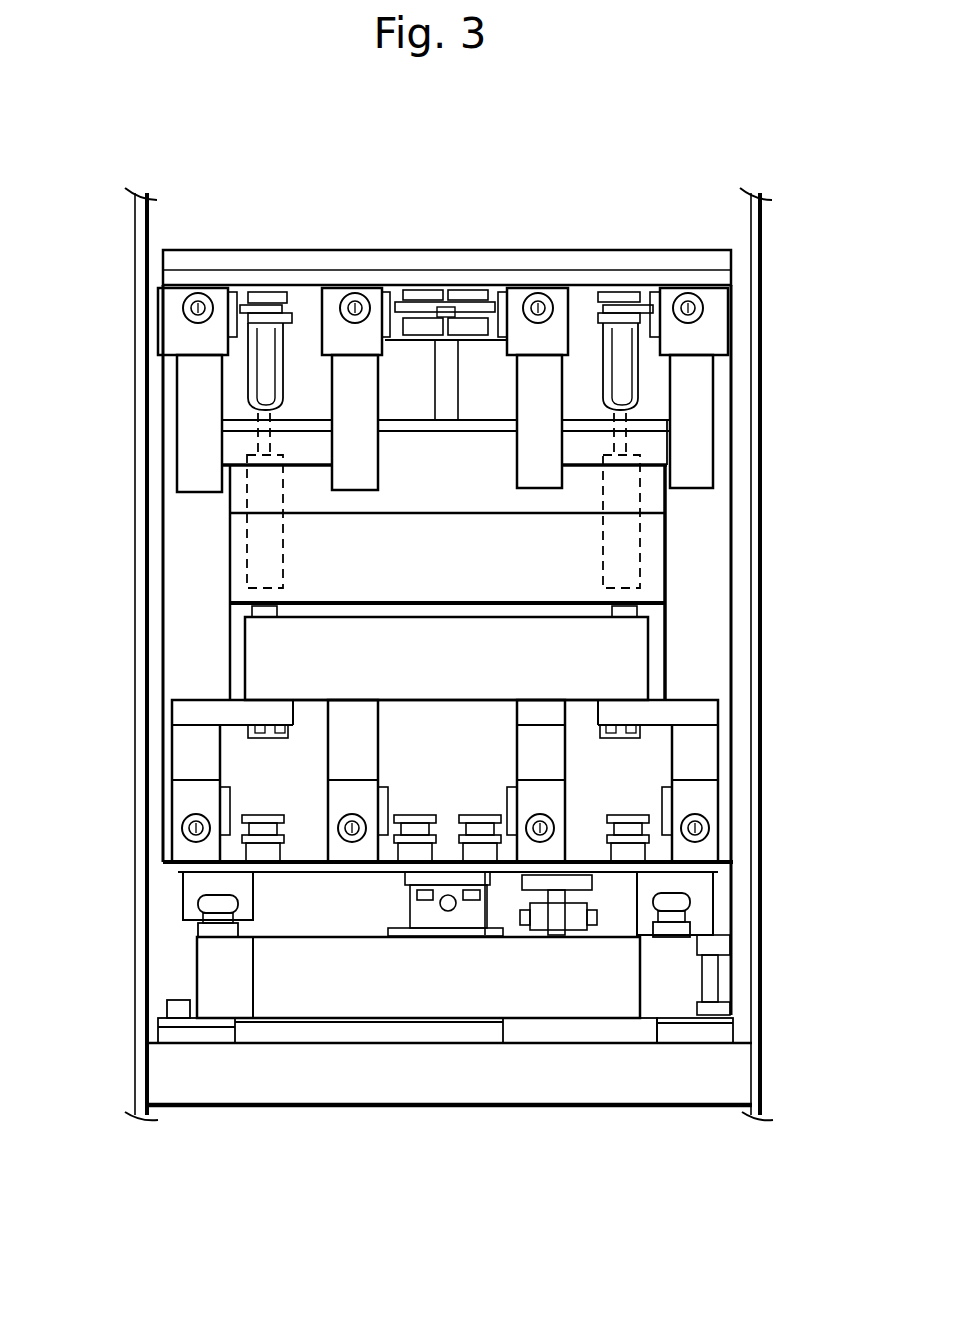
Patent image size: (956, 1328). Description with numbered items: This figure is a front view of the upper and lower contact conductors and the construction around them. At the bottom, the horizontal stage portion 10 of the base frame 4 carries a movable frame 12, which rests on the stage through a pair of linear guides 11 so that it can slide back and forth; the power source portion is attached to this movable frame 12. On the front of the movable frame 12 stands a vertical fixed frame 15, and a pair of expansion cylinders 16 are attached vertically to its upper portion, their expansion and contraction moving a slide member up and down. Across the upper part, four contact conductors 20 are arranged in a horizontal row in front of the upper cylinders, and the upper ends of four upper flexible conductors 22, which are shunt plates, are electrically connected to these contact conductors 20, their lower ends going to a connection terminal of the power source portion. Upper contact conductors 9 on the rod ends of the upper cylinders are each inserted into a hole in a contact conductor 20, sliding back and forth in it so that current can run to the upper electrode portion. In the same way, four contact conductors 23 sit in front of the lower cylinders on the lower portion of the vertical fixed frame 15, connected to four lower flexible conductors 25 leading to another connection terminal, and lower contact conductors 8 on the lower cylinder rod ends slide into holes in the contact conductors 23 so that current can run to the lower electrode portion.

The base frame 4 is at (763, 603).
The lower contact conductor 8 is at (196, 837).
The upper contact conductor 9 is at (198, 302).
The horizontal stage portion 10 is at (368, 1000).
The linear guide 11 is at (717, 890).
The movable frame 12 is at (703, 525).
The vertical fixed frame 15 is at (193, 572).
The expansion cylinder 16 is at (640, 563).
The contact conductor 20 is at (165, 305).
The upper flexible conductor 22 is at (698, 425).
The contact conductor 23 is at (188, 805).
The lower flexible conductor 25 is at (360, 755).